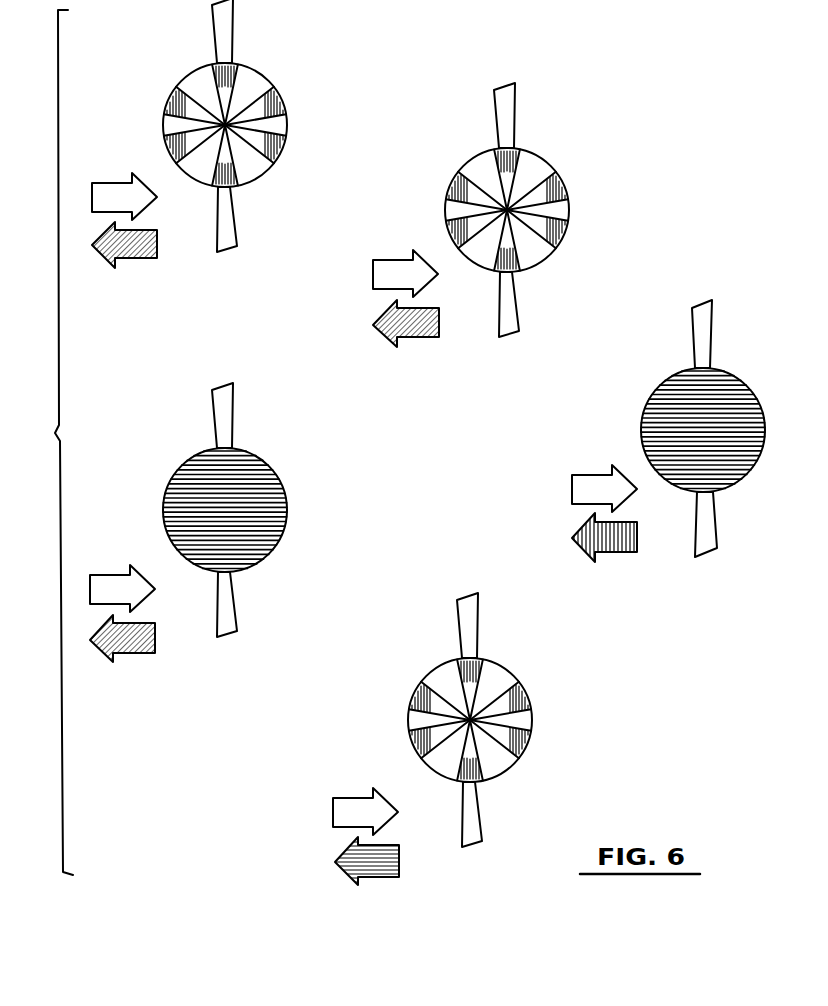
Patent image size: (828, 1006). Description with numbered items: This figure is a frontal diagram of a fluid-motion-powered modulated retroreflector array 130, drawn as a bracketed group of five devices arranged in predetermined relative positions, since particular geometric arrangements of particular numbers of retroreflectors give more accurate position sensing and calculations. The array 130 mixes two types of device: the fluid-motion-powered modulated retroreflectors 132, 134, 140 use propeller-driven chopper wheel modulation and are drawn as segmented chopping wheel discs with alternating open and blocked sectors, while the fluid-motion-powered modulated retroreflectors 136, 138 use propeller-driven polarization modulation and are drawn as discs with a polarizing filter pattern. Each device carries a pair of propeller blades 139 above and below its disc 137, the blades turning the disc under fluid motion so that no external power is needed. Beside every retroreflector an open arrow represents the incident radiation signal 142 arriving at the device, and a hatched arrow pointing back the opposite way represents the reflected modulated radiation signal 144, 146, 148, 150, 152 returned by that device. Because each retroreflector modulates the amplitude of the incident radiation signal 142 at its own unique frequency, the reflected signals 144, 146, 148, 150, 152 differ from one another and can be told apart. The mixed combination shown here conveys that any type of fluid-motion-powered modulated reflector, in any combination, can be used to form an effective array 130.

The fluid-motion-powered modulated retroreflector array 130 is at (45, 442).
The fluid-motion-powered modulated retroreflector 132 is at (253, 126).
The fluid-motion-powered modulated retroreflector 134 is at (534, 210).
The fluid-motion-powered modulated retroreflector 136 is at (706, 432).
The rotor disc 137 is at (687, 396).
The fluid-motion-powered modulated retroreflector 138 is at (254, 510).
The rotor blade 139 is at (727, 432).
The fluid-motion-powered modulated retroreflector 140 is at (494, 720).
The incident radiation signal 142 is at (354, 492).
The reflected modulated radiation signal 144 is at (152, 242).
The reflected modulated radiation signal 146 is at (434, 319).
The reflected modulated radiation signal 148 is at (632, 534).
The reflected modulated radiation signal 150 is at (151, 634).
The reflected modulated radiation signal 152 is at (395, 858).